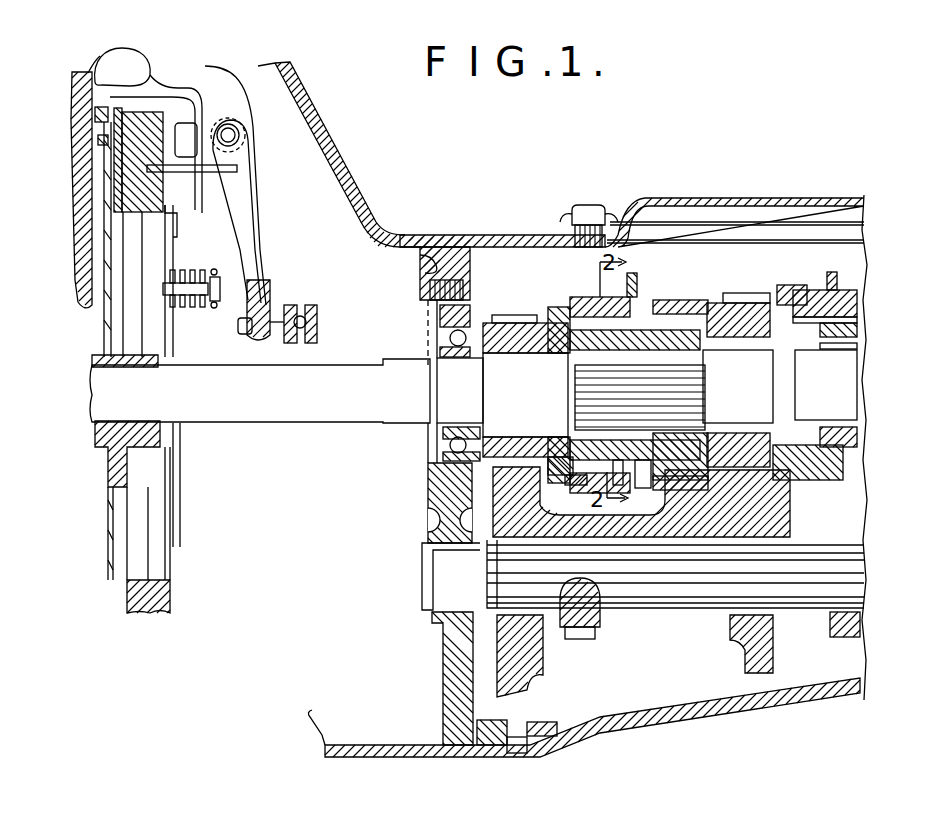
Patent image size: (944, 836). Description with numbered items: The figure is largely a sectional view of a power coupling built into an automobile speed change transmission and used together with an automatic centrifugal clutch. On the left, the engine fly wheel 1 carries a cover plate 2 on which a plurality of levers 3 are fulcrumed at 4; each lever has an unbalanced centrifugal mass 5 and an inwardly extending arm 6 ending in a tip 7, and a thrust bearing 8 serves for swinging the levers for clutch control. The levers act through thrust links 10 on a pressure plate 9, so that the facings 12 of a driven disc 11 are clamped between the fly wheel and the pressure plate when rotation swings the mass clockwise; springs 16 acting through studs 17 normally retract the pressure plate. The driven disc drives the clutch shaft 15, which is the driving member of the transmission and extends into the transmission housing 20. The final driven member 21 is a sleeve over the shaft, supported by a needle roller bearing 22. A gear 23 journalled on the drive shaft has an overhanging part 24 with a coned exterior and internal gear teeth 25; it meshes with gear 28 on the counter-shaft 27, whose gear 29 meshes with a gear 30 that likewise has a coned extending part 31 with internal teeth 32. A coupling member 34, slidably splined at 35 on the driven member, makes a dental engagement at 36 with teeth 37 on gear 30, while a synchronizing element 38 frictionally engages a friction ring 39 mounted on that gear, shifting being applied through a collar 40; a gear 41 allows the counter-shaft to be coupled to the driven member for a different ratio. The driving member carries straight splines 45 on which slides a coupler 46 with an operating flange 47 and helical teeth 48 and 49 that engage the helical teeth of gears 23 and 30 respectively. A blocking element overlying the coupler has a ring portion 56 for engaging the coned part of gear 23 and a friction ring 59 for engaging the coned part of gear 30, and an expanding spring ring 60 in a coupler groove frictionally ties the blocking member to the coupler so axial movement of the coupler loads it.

The fly wheel 1 is at (72, 190).
The cover plate 2 is at (192, 222).
The release lever 3 is at (250, 175).
The lever fulcrum 4 is at (245, 133).
The unbalanced centrifugal mass 5 is at (135, 70).
The inwardly extending arm 6 is at (252, 242).
The tip 7 is at (245, 330).
The thrust bearing 8 is at (298, 305).
The pressure plate 9 is at (128, 232).
The thrust links 10 is at (170, 172).
The driven disc 11 is at (104, 300).
The facings 12 is at (92, 115).
The clutch shaft 15 is at (350, 410).
The springs 16 is at (187, 306).
The studs 17 is at (220, 284).
The transmission housing 20 is at (510, 242).
The final driven member 21 is at (860, 330).
The needle roller bearing 22 is at (860, 348).
The gear 23 is at (518, 323).
The overhanging part 24 is at (562, 307).
The internal gear teeth 25 is at (585, 478).
The counter-shaft 27 is at (855, 568).
The gear 28 is at (540, 668).
The gear 29 is at (782, 648).
The gear 30 is at (745, 293).
The extending part 31 is at (715, 303).
The internal teeth 32 is at (690, 488).
The coupling member 34 is at (862, 305).
The splines 35 is at (860, 320).
The dental engagement 36 is at (805, 352).
The teeth 37 is at (770, 360).
The synchronizing element 38 is at (840, 295).
The friction ring 39 is at (790, 285).
The collar 40 is at (845, 492).
The gear 41 is at (858, 612).
The splines 45 is at (695, 385).
The shiftable element or coupler 46 is at (620, 460).
The operating flange 47 is at (645, 488).
The teeth 48 is at (627, 313).
The teeth 49 is at (662, 300).
The ring portion 56 is at (577, 497).
The friction ring 59 is at (698, 300).
The expanding spring ring 60 is at (634, 288).